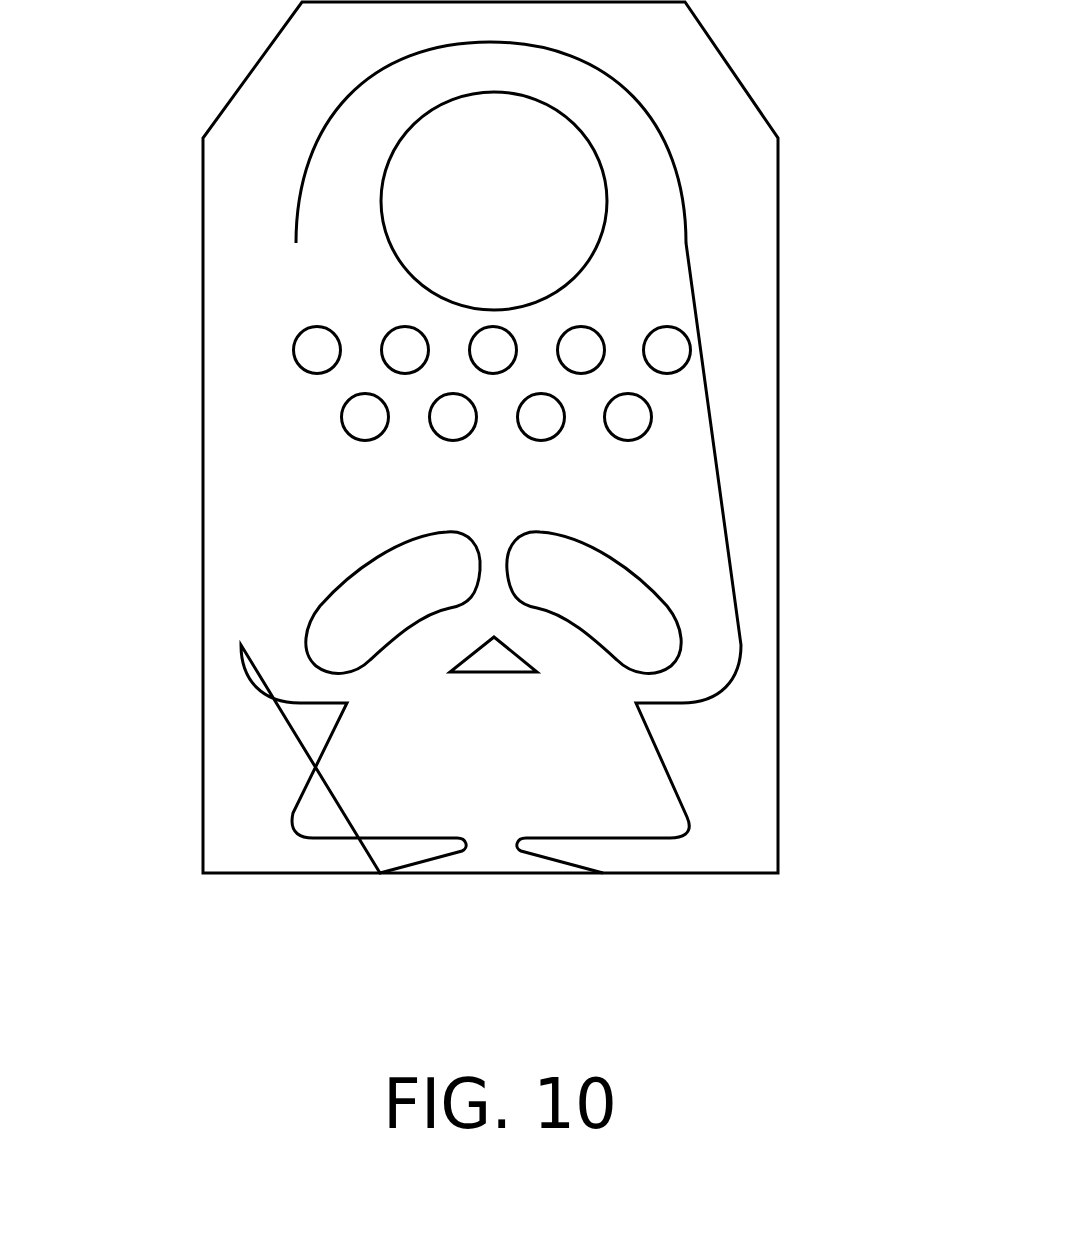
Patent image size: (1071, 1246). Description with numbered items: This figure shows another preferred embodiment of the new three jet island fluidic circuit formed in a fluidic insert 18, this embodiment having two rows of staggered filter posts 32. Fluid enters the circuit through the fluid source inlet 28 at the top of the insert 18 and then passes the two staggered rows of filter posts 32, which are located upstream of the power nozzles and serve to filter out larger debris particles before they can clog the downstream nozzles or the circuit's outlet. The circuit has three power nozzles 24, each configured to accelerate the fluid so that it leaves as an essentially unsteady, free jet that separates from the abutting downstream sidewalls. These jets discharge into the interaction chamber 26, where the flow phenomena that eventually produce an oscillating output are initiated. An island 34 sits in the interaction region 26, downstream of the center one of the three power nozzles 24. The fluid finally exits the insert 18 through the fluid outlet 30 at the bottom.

The fluidic insert 18 is at (237, 92).
The power nozzle 24 is at (502, 525).
The interaction chamber 26 is at (595, 787).
The fluid source inlet 28 is at (517, 263).
The fluid outlet 30 is at (507, 853).
The filter posts 32 is at (668, 358).
The island 34 is at (503, 657).